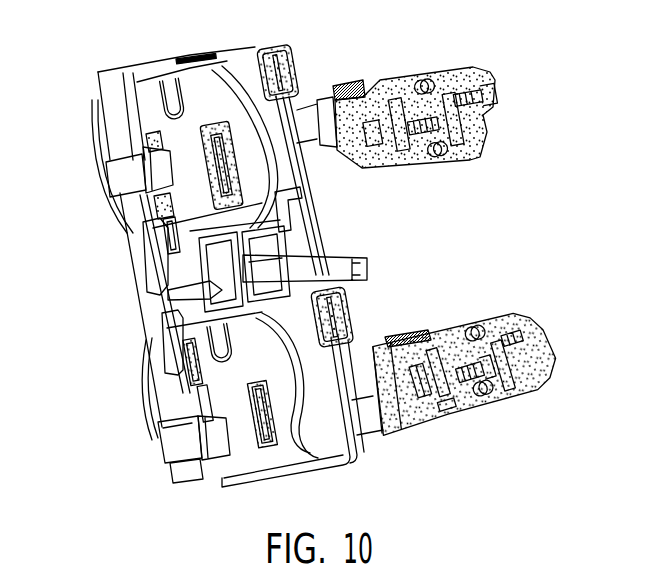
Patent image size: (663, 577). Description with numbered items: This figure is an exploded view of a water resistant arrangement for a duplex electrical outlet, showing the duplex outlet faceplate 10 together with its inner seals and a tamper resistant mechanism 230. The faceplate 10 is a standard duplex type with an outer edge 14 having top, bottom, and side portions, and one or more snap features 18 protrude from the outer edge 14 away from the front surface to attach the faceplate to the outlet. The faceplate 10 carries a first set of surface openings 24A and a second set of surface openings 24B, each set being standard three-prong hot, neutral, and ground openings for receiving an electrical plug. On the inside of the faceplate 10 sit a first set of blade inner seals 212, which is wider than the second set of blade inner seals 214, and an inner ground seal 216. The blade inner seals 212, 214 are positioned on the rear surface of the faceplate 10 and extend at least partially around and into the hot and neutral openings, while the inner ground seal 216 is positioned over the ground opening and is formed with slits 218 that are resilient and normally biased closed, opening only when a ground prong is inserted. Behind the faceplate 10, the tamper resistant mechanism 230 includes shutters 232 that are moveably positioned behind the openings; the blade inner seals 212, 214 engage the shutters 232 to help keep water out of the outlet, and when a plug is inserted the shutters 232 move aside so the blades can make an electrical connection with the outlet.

The duplex outlet faceplate 10 is at (84, 67).
The outer edge 14 is at (112, 117).
The snap feature 18 is at (145, 462).
The first set of surface openings 24A is at (270, 443).
The second set of surface openings 24B is at (172, 97).
The first set of blade inner seals 212 is at (210, 133).
The second set of blade inner seals 214 is at (263, 443).
The inner ground seal 216 is at (320, 52).
The slits 218 is at (281, 50).
The tamper resistant mechanism 230 is at (417, 57).
The shutters 232 is at (507, 377).